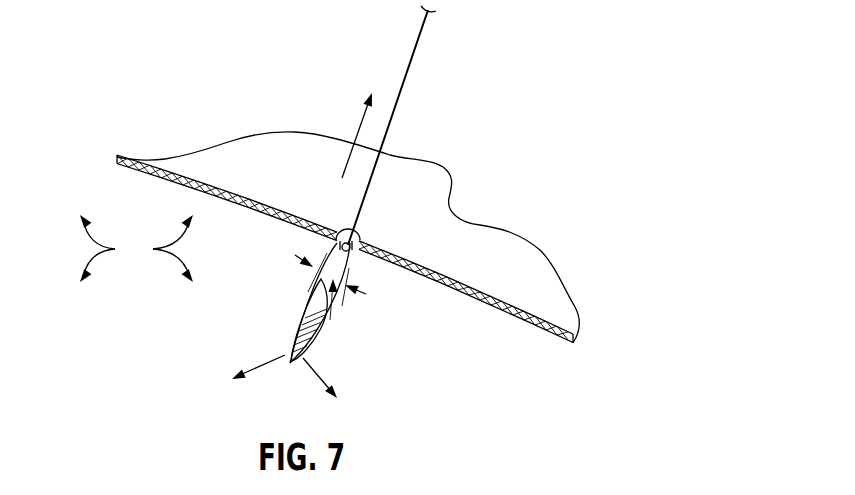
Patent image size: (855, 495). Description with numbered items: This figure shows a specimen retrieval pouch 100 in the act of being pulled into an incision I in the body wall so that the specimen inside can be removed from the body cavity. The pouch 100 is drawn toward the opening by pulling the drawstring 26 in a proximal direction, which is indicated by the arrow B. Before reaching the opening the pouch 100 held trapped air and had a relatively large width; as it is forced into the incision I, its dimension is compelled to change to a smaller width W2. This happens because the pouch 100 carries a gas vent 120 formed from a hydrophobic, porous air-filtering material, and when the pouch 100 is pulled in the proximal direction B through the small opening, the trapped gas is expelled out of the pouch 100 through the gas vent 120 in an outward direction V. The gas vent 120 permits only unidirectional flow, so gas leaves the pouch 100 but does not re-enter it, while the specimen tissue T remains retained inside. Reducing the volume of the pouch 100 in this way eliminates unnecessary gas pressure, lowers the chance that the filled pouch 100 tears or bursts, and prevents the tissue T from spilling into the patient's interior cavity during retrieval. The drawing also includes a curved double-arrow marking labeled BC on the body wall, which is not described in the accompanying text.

The drawstring 26 is at (421, 32).
The pouch 100 is at (351, 322).
The gas vent 120 is at (318, 360).
The incision I is at (356, 236).
The proximal direction arrow B is at (347, 135).
The bending/curvature direction BC is at (136, 248).
The tissue T is at (311, 302).
The outward direction V is at (285, 369).
The smaller width W2 is at (338, 292).